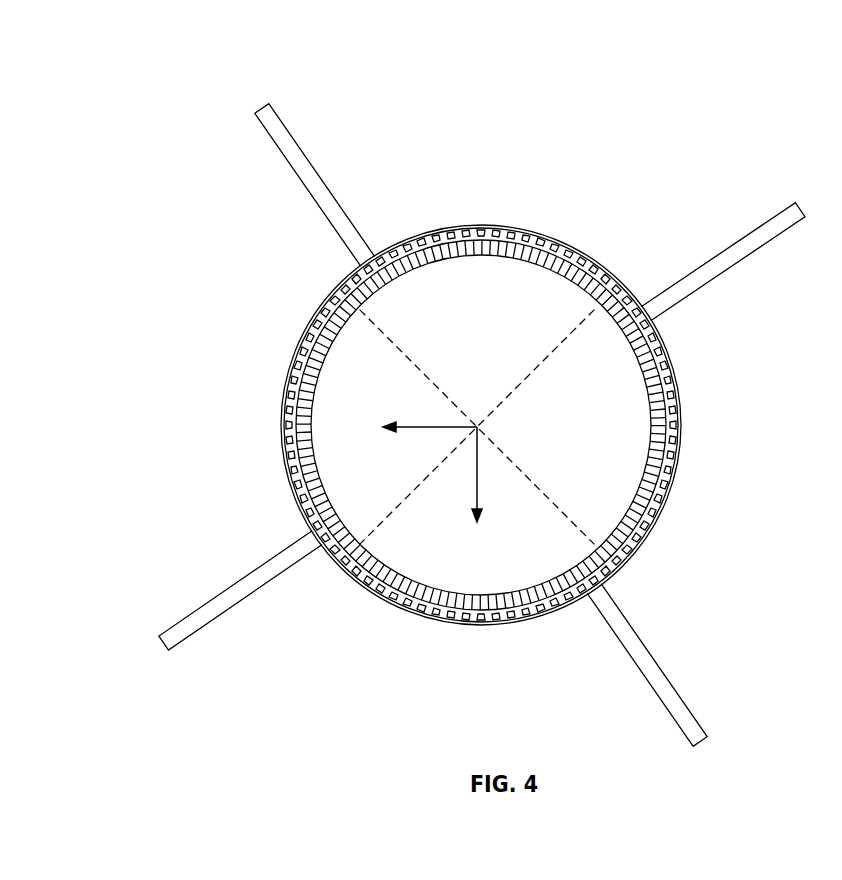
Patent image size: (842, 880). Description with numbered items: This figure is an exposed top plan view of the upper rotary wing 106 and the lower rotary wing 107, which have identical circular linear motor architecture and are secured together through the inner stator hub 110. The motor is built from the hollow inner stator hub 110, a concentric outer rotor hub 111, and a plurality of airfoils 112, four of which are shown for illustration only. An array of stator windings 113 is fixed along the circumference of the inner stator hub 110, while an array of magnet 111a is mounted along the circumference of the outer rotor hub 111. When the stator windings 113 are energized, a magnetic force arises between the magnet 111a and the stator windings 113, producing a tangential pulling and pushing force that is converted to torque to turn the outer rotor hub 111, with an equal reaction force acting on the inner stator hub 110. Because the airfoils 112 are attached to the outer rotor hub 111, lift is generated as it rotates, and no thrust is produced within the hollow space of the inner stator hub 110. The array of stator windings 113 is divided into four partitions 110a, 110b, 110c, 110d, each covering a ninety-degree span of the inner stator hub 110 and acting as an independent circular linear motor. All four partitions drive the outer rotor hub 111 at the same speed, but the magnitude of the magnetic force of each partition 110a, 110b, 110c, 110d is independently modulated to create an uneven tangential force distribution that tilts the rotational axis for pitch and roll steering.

The upper rotary wing 106 is at (556, 116).
The lower rotary wing 107 is at (556, 116).
The inner stator hub 110 is at (323, 327).
The partition 110a is at (312, 440).
The partition 110b is at (463, 255).
The partition 110c is at (650, 403).
The partition 110d is at (480, 594).
The outer rotor hub 111 is at (285, 392).
The magnet 111a is at (288, 423).
The airfoils 112 is at (293, 170).
The stator windings 113 is at (318, 503).